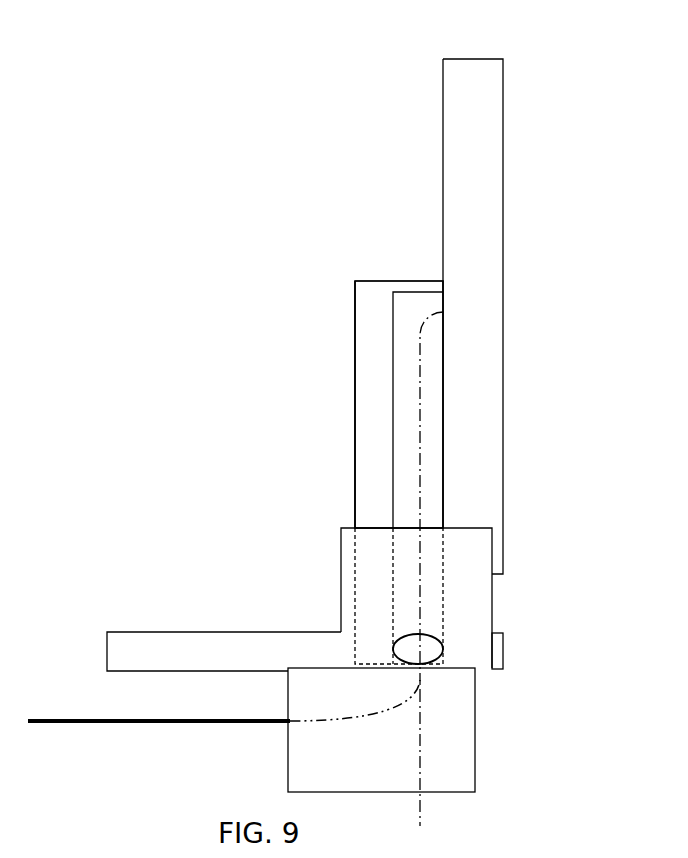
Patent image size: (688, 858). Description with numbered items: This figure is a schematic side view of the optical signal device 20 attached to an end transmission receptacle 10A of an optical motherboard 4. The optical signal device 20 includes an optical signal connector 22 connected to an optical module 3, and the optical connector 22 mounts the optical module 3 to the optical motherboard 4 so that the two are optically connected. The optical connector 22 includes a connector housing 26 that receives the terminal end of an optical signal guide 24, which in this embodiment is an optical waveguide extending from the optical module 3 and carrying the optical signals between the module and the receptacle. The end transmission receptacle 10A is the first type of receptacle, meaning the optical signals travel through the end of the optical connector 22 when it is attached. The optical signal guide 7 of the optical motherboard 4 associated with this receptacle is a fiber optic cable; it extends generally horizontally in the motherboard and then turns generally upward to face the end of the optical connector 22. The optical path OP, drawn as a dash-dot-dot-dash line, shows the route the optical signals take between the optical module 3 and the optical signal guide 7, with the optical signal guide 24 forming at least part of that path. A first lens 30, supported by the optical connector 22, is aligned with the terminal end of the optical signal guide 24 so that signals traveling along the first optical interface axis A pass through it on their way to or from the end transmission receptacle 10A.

The optical module 3 is at (464, 72).
The optical signal device 20 is at (347, 192).
The optical signal connector 22 is at (346, 302).
The optical signal guide 24 is at (408, 412).
The connector housing 26 is at (356, 352).
The optical path OP is at (420, 479).
The optical motherboard 4 is at (168, 574).
The end transmission receptacle 10A is at (518, 612).
The first lens 30 is at (428, 651).
The optical signal guide 7 is at (152, 723).
The axis A is at (420, 803).